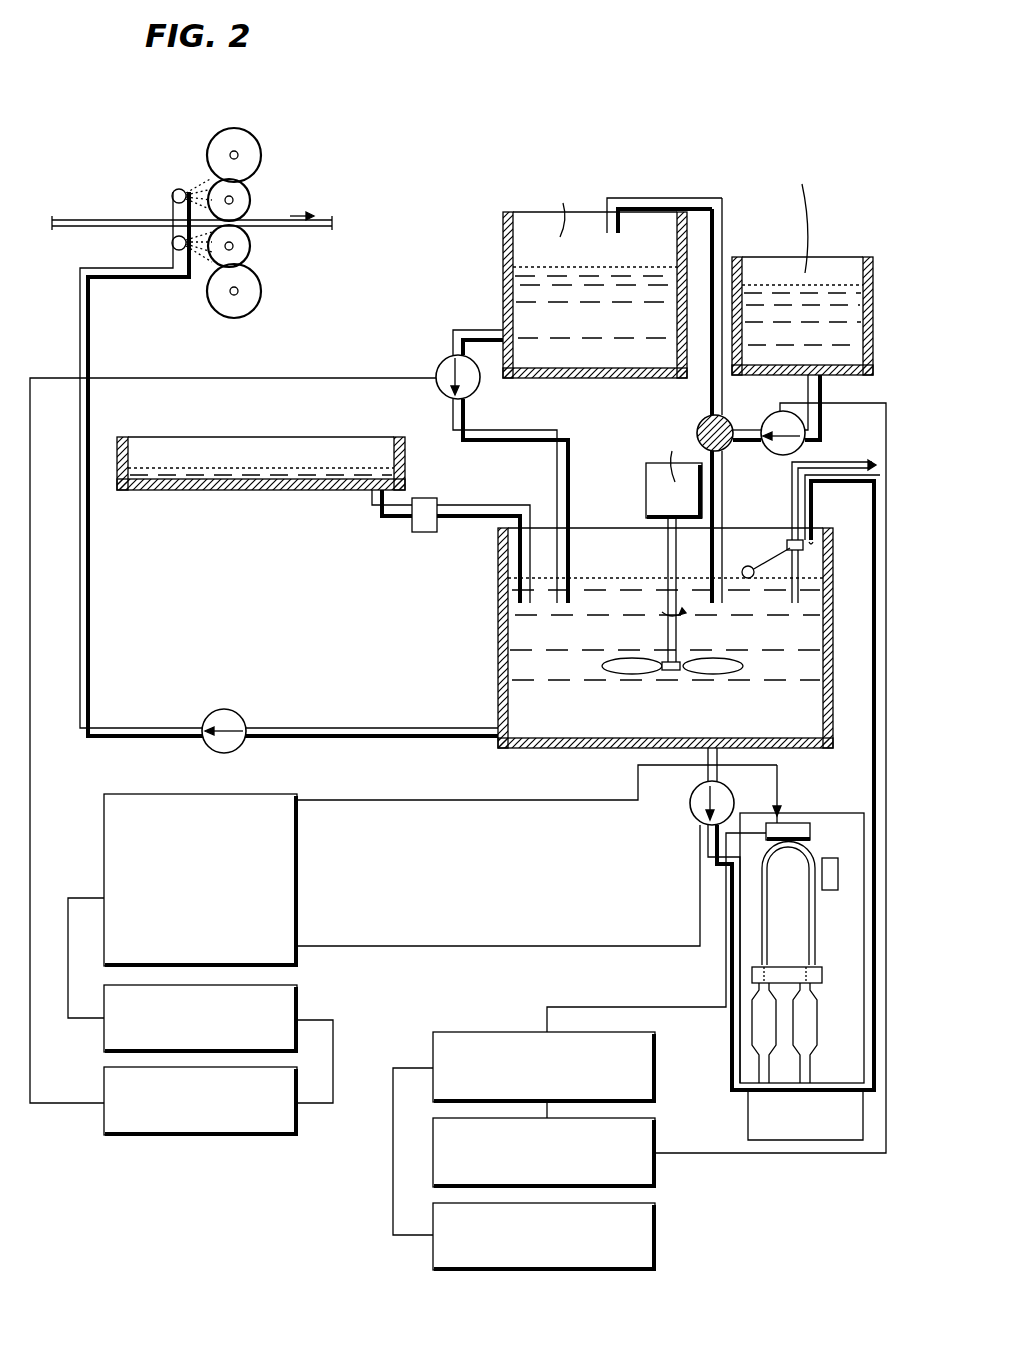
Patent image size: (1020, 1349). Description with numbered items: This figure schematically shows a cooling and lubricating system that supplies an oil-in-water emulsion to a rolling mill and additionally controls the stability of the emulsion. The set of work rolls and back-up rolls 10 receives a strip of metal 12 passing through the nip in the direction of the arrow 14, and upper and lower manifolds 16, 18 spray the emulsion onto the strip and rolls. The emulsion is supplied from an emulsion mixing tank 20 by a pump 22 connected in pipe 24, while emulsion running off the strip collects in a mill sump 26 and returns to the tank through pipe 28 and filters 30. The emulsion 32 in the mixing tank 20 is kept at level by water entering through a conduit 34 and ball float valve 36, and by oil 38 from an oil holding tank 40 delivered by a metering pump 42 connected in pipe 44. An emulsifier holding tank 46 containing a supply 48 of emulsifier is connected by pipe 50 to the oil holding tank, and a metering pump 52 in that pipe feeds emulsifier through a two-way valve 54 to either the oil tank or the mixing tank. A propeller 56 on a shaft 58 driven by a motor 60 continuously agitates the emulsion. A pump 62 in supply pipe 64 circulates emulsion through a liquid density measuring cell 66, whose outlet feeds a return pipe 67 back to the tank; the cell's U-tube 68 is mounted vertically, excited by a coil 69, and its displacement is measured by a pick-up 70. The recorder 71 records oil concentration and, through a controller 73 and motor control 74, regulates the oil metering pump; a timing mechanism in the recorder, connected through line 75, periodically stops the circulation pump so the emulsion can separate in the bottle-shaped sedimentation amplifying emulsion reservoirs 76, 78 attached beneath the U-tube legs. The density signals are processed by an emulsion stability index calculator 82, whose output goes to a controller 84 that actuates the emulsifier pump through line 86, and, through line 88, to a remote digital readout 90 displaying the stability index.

The work rolls and back-up rolls 10 is at (259, 144).
The strip of metal 12 is at (333, 222).
The arrow 14 is at (291, 216).
The upper manifold 16 is at (175, 191).
The lower manifold 18 is at (172, 243).
The emulsion mixing tank 20 is at (494, 591).
The pump 22 is at (241, 709).
The pipe 24 is at (173, 264).
The mill sump 26 is at (405, 445).
The pipe 28 is at (388, 518).
The filters 30 is at (426, 498).
The emulsion 32 is at (517, 668).
The conduit 34 is at (813, 463).
The ball float valve 36 is at (788, 540).
The oil 38 is at (513, 322).
The oil holding tank 40 is at (503, 270).
The metering pump 42 is at (470, 396).
The pipe 44 is at (568, 481).
The emulsifier holding tank 46 is at (873, 257).
The supply of emulsifying agent 48 is at (777, 362).
The pipe 50 is at (722, 235).
The metering pump 52 is at (778, 453).
The two-way valve 54 is at (702, 420).
The propeller 56 is at (744, 667).
The shaft 58 is at (676, 630).
The motor 60 is at (646, 500).
The pump 62 is at (692, 818).
The supply pipe 64 is at (708, 772).
The liquid density measuring cell 66 is at (774, 812).
The return pipe 67 is at (872, 796).
The U-tube 68 is at (763, 923).
The coil 69 is at (838, 882).
The pick-up 70 is at (795, 823).
The recorder 71 is at (300, 851).
The controller 73 is at (300, 1001).
The motor control 74 is at (283, 1136).
The line 75 is at (487, 946).
The sedimentation amplifying emulsion reservoir 76 is at (455, 800).
The sedimentation amplifying emulsion reservoir 78 is at (610, 800).
The emulsion stability index meantime calculator 82 is at (655, 1068).
The controller 84 is at (655, 1183).
The line 86 is at (807, 1153).
The line 88 is at (726, 976).
The digital readout 90 is at (655, 1260).